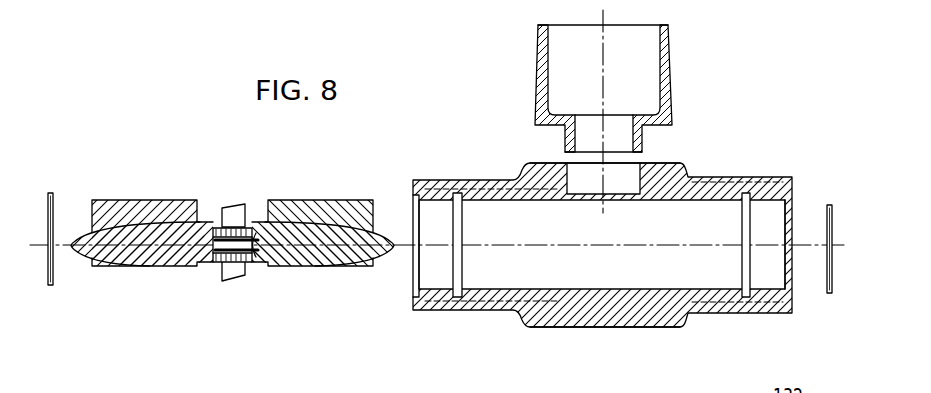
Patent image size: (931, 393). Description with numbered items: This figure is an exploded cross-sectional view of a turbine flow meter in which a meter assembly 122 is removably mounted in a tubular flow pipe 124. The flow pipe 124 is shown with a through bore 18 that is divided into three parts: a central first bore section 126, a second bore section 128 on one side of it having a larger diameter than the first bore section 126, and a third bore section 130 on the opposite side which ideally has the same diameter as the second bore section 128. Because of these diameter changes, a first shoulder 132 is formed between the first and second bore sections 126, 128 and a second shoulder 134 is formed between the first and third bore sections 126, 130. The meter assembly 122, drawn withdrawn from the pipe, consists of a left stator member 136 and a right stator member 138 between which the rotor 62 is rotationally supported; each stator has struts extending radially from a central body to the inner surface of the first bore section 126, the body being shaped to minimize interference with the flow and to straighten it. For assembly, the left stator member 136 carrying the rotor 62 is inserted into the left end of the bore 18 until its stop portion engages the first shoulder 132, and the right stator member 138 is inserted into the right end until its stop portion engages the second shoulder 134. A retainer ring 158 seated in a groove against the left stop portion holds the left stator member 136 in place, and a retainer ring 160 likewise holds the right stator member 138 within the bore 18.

The through bore 18 is at (648, 234).
The rotor 62 is at (240, 207).
The meter assembly 122 is at (232, 241).
The flow pipe 124 is at (594, 273).
The first bore section 126 is at (600, 288).
The second bore section 128 is at (433, 288).
The third bore section 130 is at (773, 287).
The first shoulder 132 is at (462, 285).
The second shoulder 134 is at (743, 285).
The left stator member 136 is at (158, 199).
The right stator member 138 is at (328, 201).
The retainer ring 158 is at (52, 197).
The retainer ring 160 is at (830, 205).